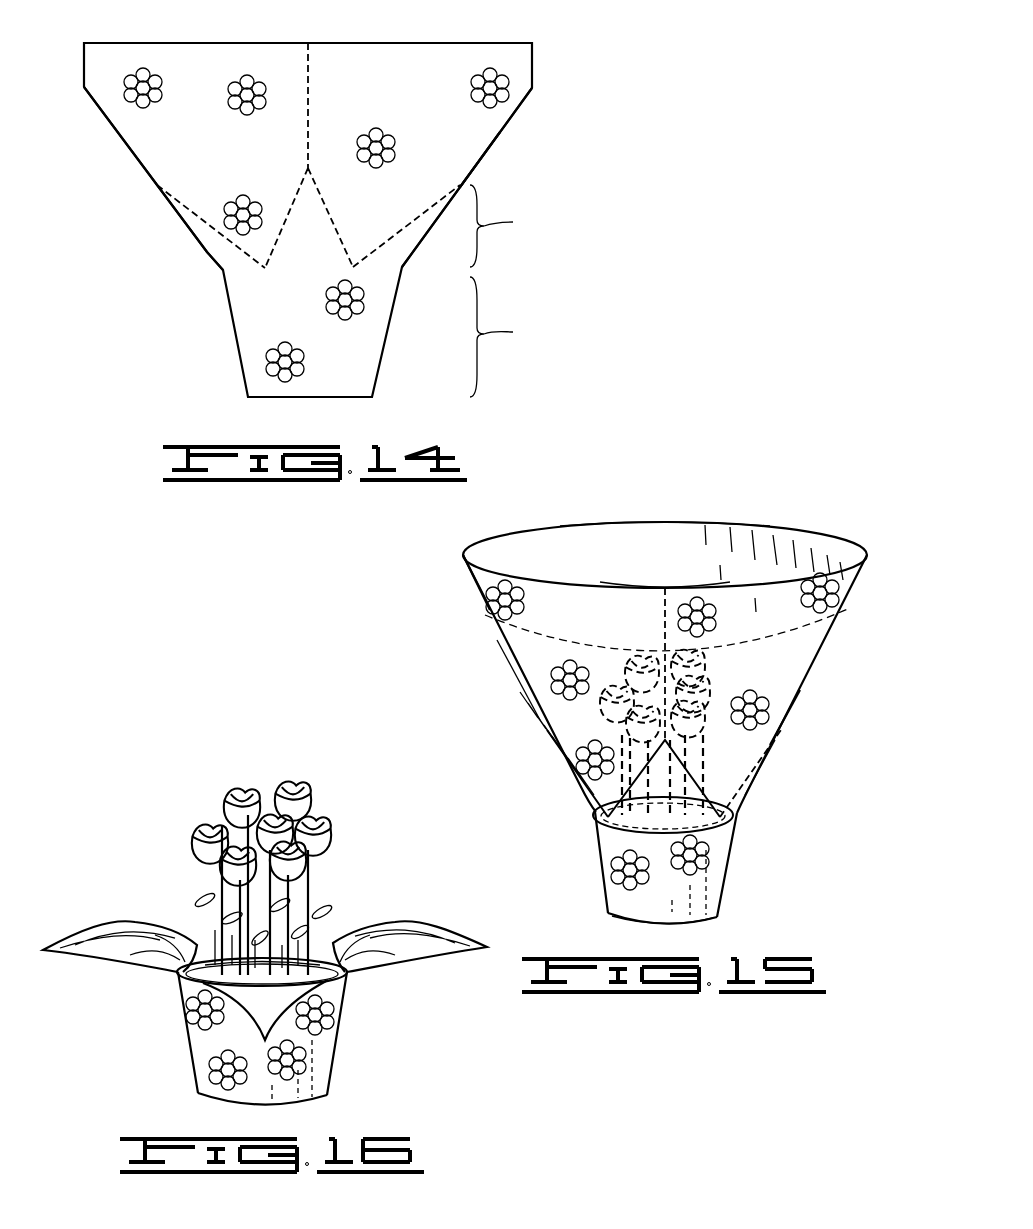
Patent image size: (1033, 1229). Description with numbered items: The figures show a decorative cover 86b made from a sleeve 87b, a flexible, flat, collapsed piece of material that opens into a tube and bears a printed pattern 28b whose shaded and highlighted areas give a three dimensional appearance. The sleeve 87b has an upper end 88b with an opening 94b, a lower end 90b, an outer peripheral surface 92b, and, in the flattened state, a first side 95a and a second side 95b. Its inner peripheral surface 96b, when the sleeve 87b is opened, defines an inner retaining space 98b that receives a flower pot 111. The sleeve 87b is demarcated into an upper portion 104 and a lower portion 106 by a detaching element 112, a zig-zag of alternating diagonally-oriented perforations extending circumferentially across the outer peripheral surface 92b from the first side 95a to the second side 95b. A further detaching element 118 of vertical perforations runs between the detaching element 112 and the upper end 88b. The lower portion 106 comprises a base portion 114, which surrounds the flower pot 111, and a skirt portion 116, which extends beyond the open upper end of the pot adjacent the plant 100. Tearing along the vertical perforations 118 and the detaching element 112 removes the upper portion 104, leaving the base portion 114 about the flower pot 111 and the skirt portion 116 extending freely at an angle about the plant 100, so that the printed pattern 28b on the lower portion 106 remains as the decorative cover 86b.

In FIG. 14, the printed pattern 28b is at (226, 206).
In FIG. 15, the printed pattern 28b is at (768, 690).
In FIG. 14, the decorative cover 86b is at (566, 90).
In FIG. 15, the decorative cover 86b is at (770, 462).
In FIG. 16, the decorative cover 86b is at (383, 990).
In FIG. 14, the sleeve 87b is at (520, 115).
In FIG. 15, the sleeve 87b is at (785, 757).
In FIG. 14, the upper end 88b is at (328, 43).
In FIG. 15, the upper end 88b is at (595, 522).
In FIG. 14, the lower end 90b is at (358, 397).
In FIG. 15, the lower end 90b is at (692, 922).
In FIG. 14, the outer peripheral surface 92b is at (438, 80).
In FIG. 15, the outer peripheral surface 92b is at (497, 655).
In FIG. 15, the opening 94b is at (780, 545).
In FIG. 14, the first side 95a is at (207, 252).
In FIG. 14, the second side 95b is at (487, 148).
In FIG. 15, the inner peripheral surface 96b is at (485, 555).
In FIG. 15, the inner retaining space 98b is at (668, 560).
In FIG. 16, the plant 100 is at (352, 818).
In FIG. 14, the upper portion 104 is at (175, 116).
In FIG. 15, the upper portion 104 is at (497, 628).
In FIG. 14, the lower portion 106 is at (290, 322).
In FIG. 15, the lower portion 106 is at (612, 842).
In FIG. 15, the flower pot 111 is at (728, 838).
In FIG. 16, the flower pot 111 is at (330, 938).
In FIG. 14, the detaching element 112 is at (298, 195).
In FIG. 15, the detaching element 112 is at (570, 752).
In FIG. 14, the base portion 114 is at (516, 337).
In FIG. 15, the base portion 114 is at (727, 872).
In FIG. 16, the base portion 114 is at (335, 1042).
In FIG. 14, the skirt portion 116 is at (516, 226).
In FIG. 15, the skirt portion 116 is at (745, 790).
In FIG. 16, the skirt portion 116 is at (138, 945).
In FIG. 14, the detaching element 118 is at (307, 78).
In FIG. 15, the detaching element 118 is at (660, 605).